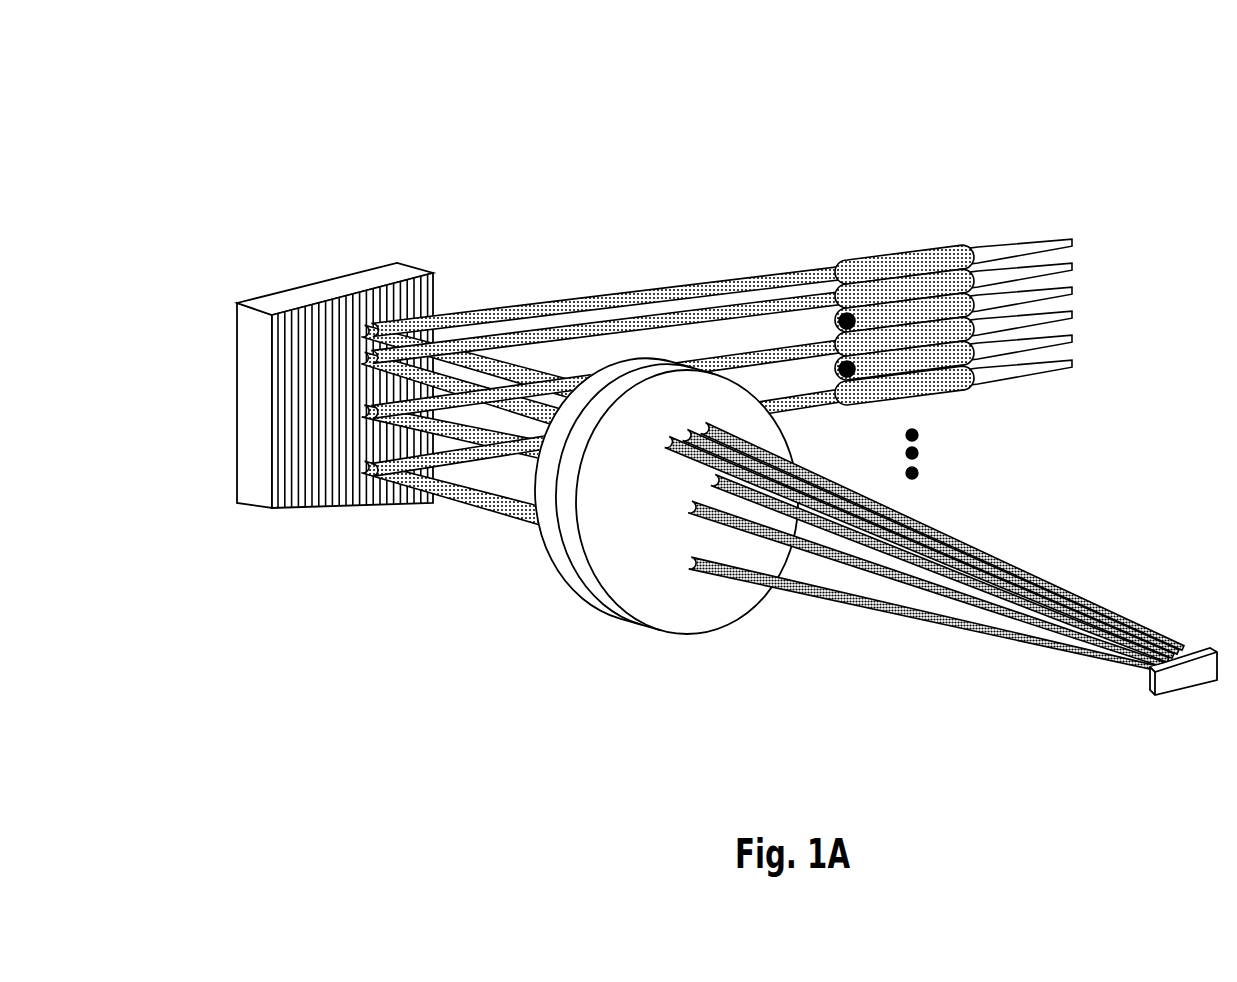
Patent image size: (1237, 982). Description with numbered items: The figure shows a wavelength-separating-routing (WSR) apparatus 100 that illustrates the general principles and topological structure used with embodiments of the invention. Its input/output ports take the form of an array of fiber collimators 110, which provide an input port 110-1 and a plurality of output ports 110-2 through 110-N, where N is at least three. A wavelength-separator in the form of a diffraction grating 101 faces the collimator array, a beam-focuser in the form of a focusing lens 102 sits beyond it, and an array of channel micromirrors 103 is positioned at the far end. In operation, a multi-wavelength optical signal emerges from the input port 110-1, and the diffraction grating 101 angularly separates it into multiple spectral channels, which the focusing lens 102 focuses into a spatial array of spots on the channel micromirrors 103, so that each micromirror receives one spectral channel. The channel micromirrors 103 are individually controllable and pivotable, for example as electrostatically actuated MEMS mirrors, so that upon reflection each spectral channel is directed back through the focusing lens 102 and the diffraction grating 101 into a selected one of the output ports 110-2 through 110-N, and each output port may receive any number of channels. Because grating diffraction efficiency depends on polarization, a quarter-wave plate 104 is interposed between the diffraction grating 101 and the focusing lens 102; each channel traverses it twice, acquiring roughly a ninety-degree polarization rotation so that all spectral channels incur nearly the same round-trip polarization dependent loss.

The wavelength-separating-routing (WSR) apparatus 100 is at (330, 172).
The diffraction grating 101 is at (412, 262).
The focusing lens 102 is at (592, 593).
The array of channel micromirrors 103 is at (1180, 692).
The quarter-wave plate 104 is at (550, 557).
The array of fiber collimators 110 is at (899, 277).
The input port 110-1 is at (872, 262).
The output port 110-2 is at (973, 270).
The output port 110-N is at (920, 478).